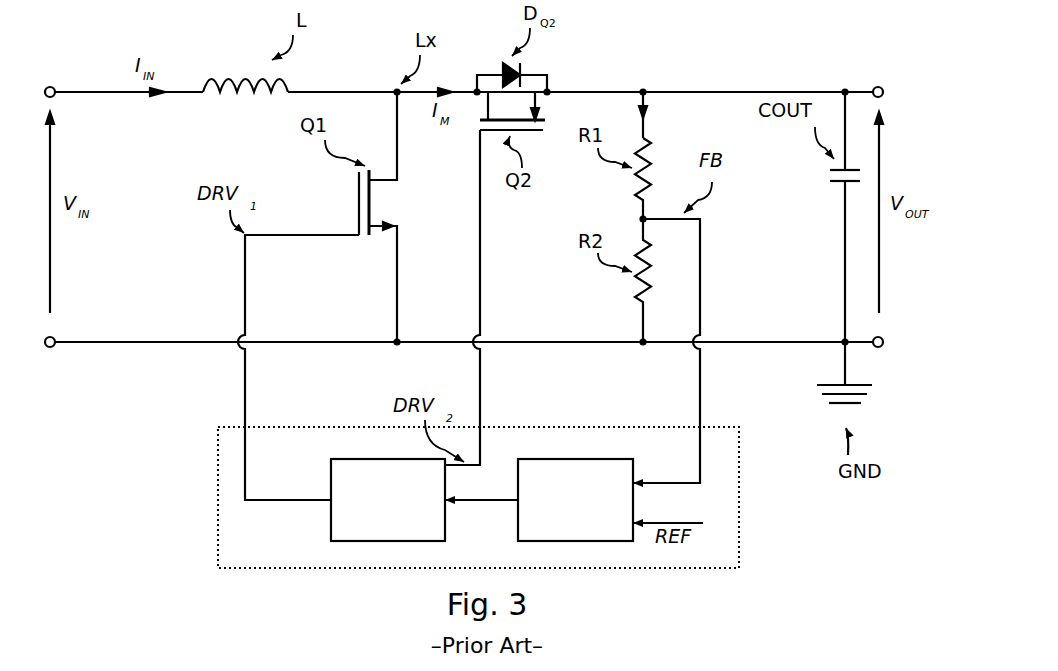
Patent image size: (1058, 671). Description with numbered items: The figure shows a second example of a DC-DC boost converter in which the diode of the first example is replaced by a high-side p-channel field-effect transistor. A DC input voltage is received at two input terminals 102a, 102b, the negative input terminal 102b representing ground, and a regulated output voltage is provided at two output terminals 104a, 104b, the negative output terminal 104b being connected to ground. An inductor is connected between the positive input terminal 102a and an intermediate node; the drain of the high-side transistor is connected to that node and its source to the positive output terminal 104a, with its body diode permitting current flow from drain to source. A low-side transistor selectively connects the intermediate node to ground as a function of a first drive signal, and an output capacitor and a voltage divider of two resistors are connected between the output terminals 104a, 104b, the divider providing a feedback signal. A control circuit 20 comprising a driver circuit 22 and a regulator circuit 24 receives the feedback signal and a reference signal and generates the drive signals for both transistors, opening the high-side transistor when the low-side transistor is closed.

The positive input terminal 102a is at (50, 86).
The negative input terminal 102b is at (50, 348).
The positive output terminal 104a is at (878, 86).
The negative output terminal 104b is at (878, 348).
The control circuit 20 is at (558, 424).
The driver circuit 22 is at (388, 500).
The regulator circuit 24 is at (575, 500).